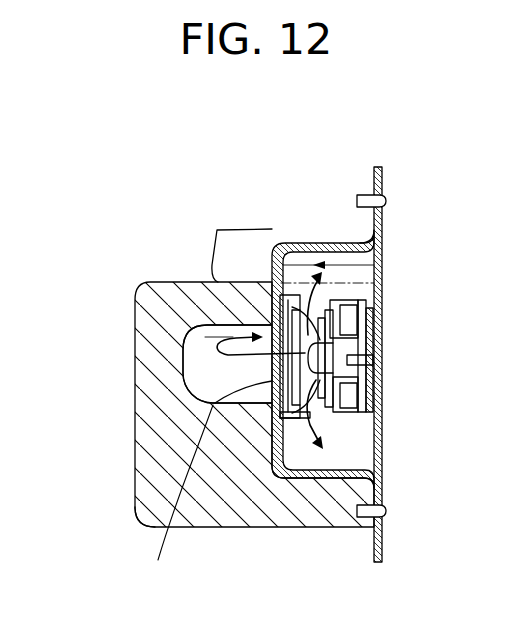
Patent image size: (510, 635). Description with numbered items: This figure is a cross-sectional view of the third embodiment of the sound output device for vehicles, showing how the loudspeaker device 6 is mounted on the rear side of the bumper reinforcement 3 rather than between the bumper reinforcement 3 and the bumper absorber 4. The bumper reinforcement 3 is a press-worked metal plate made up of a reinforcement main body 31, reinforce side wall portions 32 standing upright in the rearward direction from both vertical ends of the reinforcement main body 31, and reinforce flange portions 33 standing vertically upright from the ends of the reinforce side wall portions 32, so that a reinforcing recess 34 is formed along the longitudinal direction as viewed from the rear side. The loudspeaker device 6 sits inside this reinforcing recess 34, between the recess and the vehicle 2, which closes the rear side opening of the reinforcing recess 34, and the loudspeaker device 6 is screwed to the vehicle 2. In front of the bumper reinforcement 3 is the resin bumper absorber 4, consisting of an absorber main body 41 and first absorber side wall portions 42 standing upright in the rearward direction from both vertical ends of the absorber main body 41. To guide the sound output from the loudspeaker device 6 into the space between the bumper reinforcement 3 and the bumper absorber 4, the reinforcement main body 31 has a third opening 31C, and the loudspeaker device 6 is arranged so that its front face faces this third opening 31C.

The vehicle 2 is at (383, 546).
The bumper reinforcement 3 is at (325, 234).
The bumper absorber 4 is at (163, 278).
The loudspeaker device 6 is at (353, 312).
The reinforcement main body 31 is at (302, 247).
The third opening 31C is at (137, 497).
The reinforce side wall portion 32 is at (346, 240).
The reinforce flange portion 33 is at (382, 182).
The reinforcing recess 34 is at (340, 264).
The absorber main body 41 is at (145, 337).
The first absorber side wall portion 42 is at (240, 283).